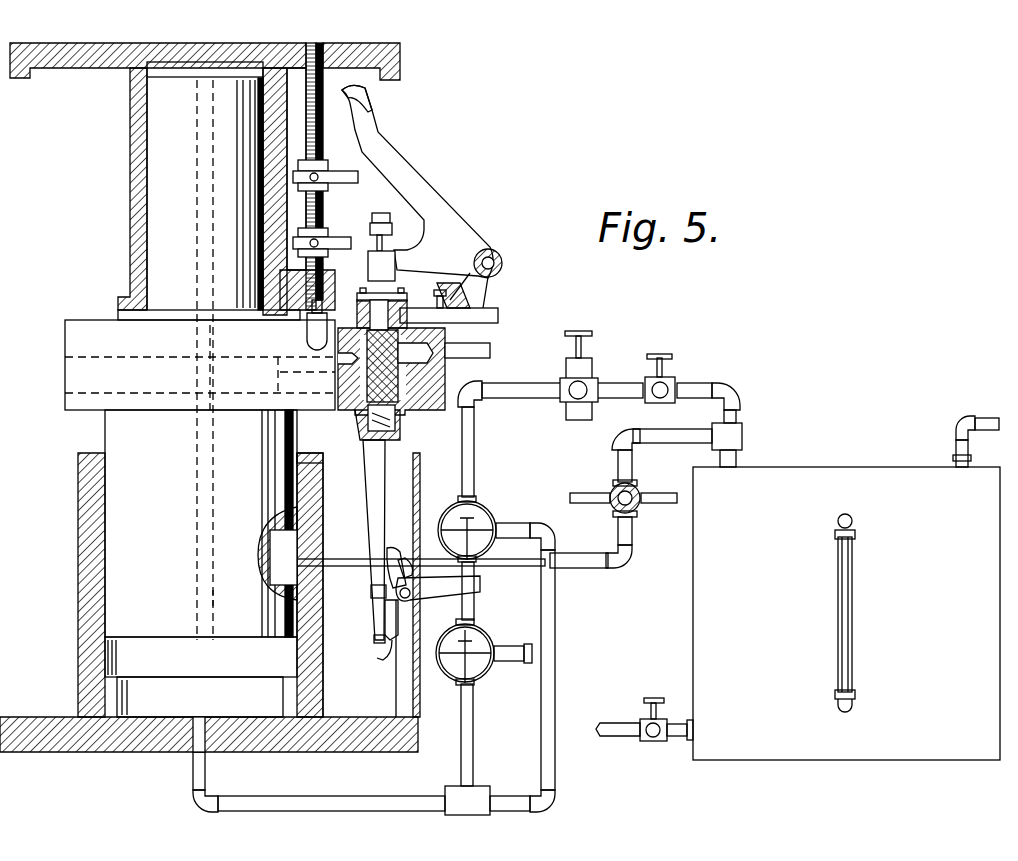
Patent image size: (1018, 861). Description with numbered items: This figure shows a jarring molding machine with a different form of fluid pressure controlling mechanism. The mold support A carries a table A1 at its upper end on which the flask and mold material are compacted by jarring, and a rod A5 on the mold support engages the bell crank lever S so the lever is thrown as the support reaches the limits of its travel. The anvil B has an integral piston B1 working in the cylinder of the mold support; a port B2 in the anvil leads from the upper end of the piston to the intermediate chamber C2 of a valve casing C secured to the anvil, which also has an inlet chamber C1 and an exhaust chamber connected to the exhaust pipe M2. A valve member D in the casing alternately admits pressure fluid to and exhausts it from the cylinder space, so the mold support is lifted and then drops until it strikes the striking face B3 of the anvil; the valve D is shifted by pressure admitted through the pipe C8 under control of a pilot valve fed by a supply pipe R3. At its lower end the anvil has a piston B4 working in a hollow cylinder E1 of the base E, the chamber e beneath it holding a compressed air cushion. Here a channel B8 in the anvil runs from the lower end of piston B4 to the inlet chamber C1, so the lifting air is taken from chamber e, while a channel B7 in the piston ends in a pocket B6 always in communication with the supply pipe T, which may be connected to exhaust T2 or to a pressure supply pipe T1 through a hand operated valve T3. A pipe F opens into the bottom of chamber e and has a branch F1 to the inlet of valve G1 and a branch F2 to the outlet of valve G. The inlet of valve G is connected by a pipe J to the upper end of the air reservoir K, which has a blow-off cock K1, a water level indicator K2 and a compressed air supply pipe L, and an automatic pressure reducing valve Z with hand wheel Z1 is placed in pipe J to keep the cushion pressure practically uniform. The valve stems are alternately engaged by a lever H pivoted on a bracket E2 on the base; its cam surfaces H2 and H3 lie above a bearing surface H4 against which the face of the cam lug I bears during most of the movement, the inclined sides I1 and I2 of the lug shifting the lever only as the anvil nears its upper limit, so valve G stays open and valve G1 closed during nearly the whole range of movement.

The mold support A is at (210, 191).
The table A1 is at (70, 62).
The rod A5 is at (352, 85).
The anvil B is at (200, 365).
The piston B1 is at (205, 193).
The port B2 is at (207, 260).
The striking face B3 is at (130, 318).
The piston B4 is at (200, 563).
The pocket B6 is at (277, 563).
The channel B7 is at (200, 381).
The channel B8 is at (213, 598).
The valve casing C is at (448, 388).
The inlet chamber C1 is at (355, 418).
The intermediate chamber C2 is at (272, 367).
The pipe C8 is at (500, 318).
The valve member D is at (405, 420).
The base E is at (50, 732).
The hollow cylinder E1 is at (307, 657).
The bracket E2 is at (395, 690).
The cylinder space e is at (128, 660).
The pipe F is at (372, 796).
The branch F1 is at (462, 755).
The branch F2 is at (563, 712).
The valve G is at (460, 505).
The valve G1 is at (490, 640).
The lever H is at (418, 600).
The cam surface H2 is at (396, 548).
The cam surface H3 is at (413, 572).
The bearing surface H4 is at (390, 640).
The valve rod I is at (378, 620).
The cam surface I1 is at (371, 592).
The cam surface I2 is at (374, 642).
The pipe J is at (717, 379).
The air reservoir K is at (846, 613).
The blow-off cock K1 is at (672, 740).
The water level indicator K2 is at (853, 622).
The compressed air supply pipe L is at (956, 452).
The exhaust pipe M2 is at (492, 350).
The supply pipe R3 is at (308, 330).
The bell crank lever S is at (455, 222).
The supply pipe T is at (578, 570).
The pressure fluid supply pipe T1 is at (640, 487).
The exhaust T2 is at (650, 515).
The hand operated valve T3 is at (615, 512).
The automatic pressure reducing valve Z is at (641, 371).
The hand wheel Z1 is at (585, 328).